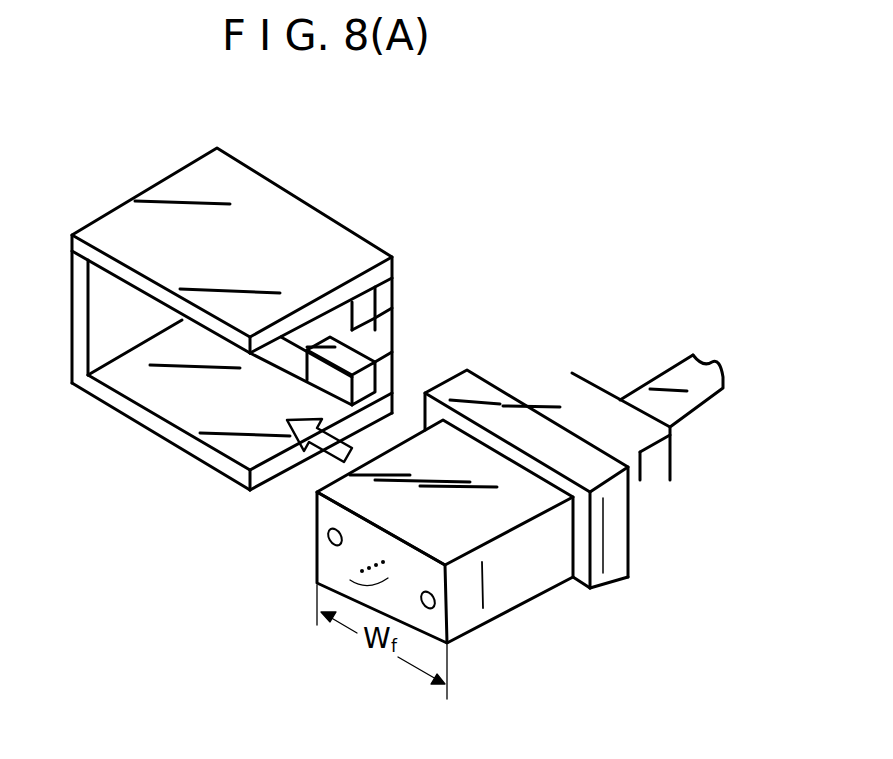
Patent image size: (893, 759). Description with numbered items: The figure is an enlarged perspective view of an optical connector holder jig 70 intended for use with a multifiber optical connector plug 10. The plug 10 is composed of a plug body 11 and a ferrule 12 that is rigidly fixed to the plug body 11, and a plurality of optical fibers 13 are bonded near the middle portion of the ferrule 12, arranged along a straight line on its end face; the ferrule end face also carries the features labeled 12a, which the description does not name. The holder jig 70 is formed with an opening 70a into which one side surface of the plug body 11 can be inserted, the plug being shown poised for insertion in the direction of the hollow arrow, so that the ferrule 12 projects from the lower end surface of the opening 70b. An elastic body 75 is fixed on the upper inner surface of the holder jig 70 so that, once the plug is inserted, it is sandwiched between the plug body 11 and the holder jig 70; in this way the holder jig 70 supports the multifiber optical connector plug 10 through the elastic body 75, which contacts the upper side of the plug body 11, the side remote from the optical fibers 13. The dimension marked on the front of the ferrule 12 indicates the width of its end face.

The optical connector holder jig 70 is at (282, 200).
The opening 70a is at (284, 352).
The opening 70b is at (155, 378).
The elastic body 75 is at (360, 308).
The multifiber optical connector plug 10 is at (692, 443).
The plug body 11 is at (617, 540).
The ferrule 12 is at (512, 592).
The guide holes 12a is at (325, 540).
The optical fibers 13 is at (350, 581).